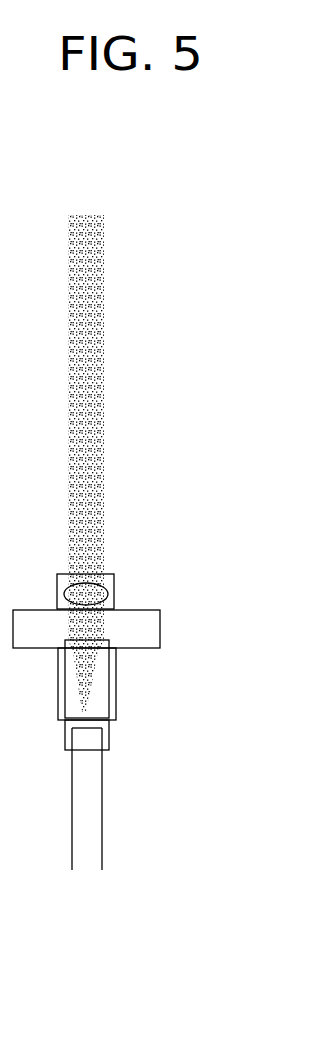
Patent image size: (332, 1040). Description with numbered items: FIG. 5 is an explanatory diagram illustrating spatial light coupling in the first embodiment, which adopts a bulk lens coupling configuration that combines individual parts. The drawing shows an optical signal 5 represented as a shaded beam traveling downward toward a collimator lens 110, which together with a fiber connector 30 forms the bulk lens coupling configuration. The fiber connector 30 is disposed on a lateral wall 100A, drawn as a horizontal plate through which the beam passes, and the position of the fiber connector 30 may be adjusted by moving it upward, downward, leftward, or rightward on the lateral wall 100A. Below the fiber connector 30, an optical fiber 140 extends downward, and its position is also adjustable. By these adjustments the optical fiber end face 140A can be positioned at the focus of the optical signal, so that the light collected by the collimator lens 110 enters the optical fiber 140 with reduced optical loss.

The shaft 5 is at (97, 430).
The collimator lens 110 is at (114, 590).
The lateral wall 100A is at (160, 628).
The fiber connector 30 is at (116, 690).
The optical fiber end face 140A is at (109, 730).
The optical fiber 140 is at (93, 829).